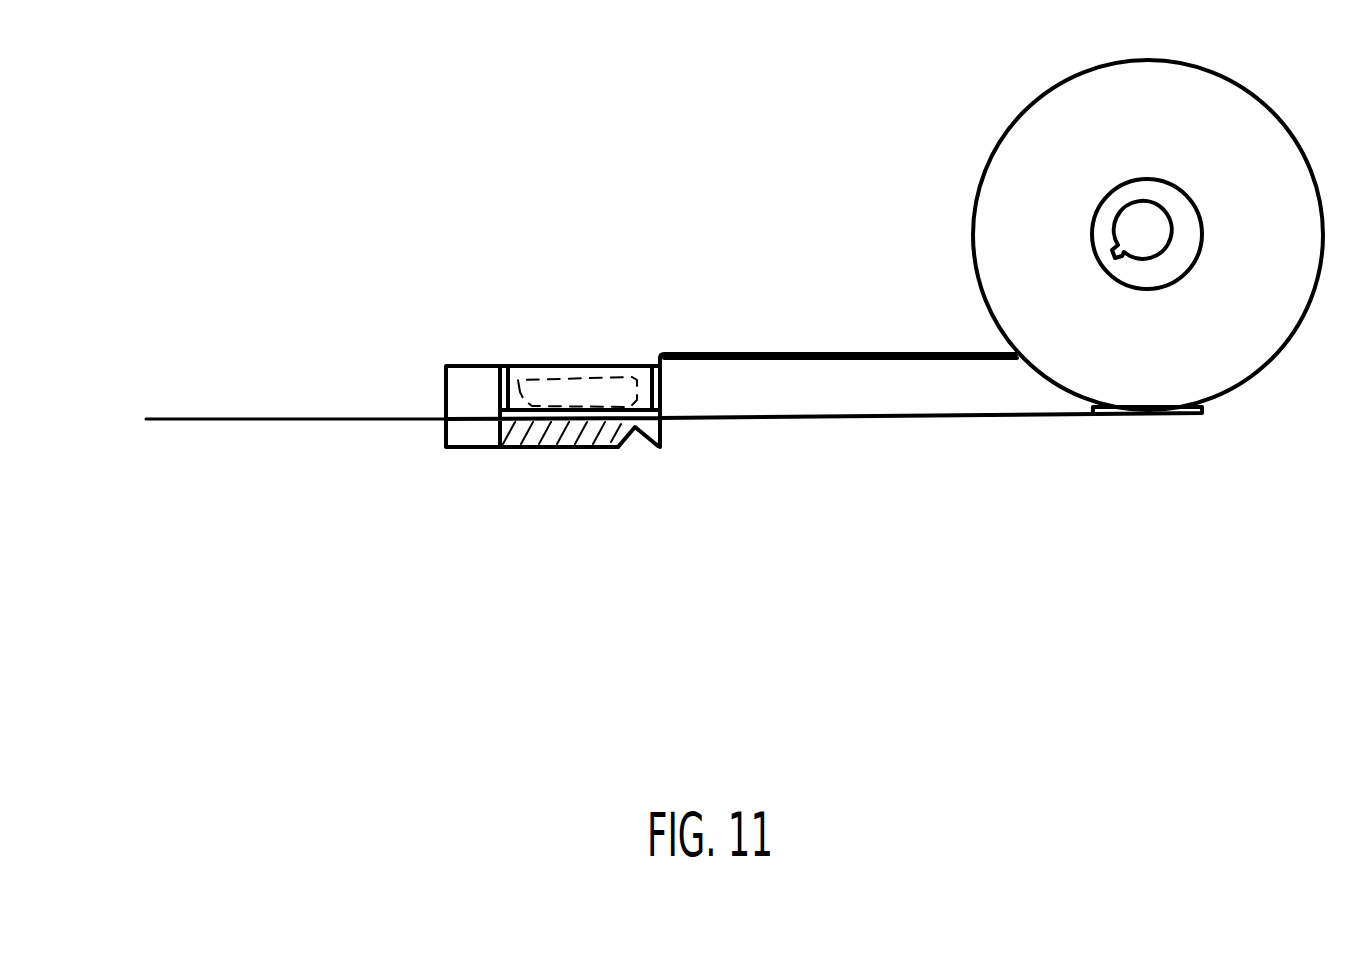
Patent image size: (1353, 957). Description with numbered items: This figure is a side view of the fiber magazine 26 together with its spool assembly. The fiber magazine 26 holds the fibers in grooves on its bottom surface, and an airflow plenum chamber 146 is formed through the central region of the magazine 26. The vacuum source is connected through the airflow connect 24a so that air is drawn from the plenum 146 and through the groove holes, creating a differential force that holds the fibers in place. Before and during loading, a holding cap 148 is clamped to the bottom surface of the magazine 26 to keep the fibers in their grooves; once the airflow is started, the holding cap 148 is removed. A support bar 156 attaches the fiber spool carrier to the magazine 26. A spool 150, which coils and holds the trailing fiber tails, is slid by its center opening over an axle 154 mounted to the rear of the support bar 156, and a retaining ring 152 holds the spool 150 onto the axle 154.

The fiber magazine 26 is at (527, 366).
The airflow plenum chamber 146 is at (598, 370).
The holding cap 148 is at (574, 448).
The airflow connect 24a is at (613, 367).
The support bar 156 is at (872, 412).
The spool 150 is at (988, 145).
The retaining ring 152 is at (1107, 193).
The axle 154 is at (1117, 222).